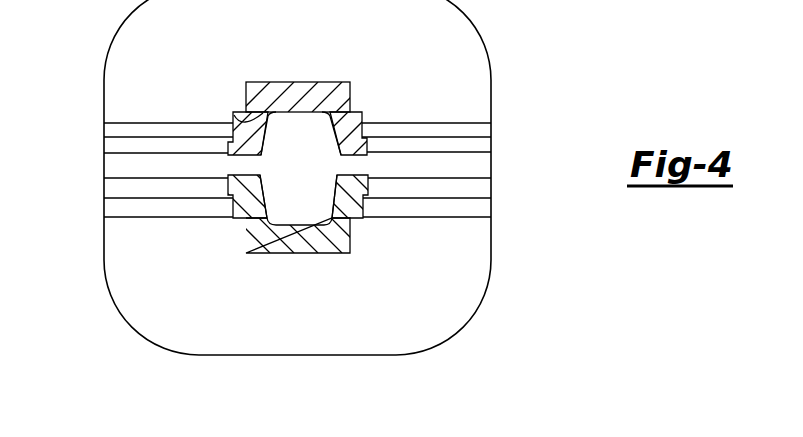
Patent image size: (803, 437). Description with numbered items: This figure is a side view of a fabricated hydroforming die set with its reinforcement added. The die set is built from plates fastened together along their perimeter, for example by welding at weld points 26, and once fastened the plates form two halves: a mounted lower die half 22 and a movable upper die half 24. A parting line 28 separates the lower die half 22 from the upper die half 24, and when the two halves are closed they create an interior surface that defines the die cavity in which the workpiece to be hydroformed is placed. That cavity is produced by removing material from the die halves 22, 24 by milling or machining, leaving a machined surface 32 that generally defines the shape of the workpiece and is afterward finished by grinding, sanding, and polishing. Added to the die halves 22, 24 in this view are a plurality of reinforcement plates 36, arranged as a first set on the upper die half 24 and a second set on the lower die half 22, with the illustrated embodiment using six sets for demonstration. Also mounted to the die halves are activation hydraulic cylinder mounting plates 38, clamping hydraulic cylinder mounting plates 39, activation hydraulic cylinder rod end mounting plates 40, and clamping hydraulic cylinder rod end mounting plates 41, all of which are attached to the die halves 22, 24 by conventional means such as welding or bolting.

The mounted lower die half 22 is at (358, 242).
The movable upper die half 24 is at (236, 85).
The weld points 26 is at (352, 112).
The parting line 28 is at (338, 176).
The machined surface 32 is at (243, 113).
The reinforcement plates 36 is at (104, 87).
The activation hydraulic cylinder mounting plates 38 is at (108, 208).
The clamping hydraulic cylinder mounting plates 39 is at (487, 208).
The activation hydraulic cylinder rod end mounting plates 40 is at (108, 149).
The clamping hydraulic cylinder rod end mounting plates 41 is at (487, 151).